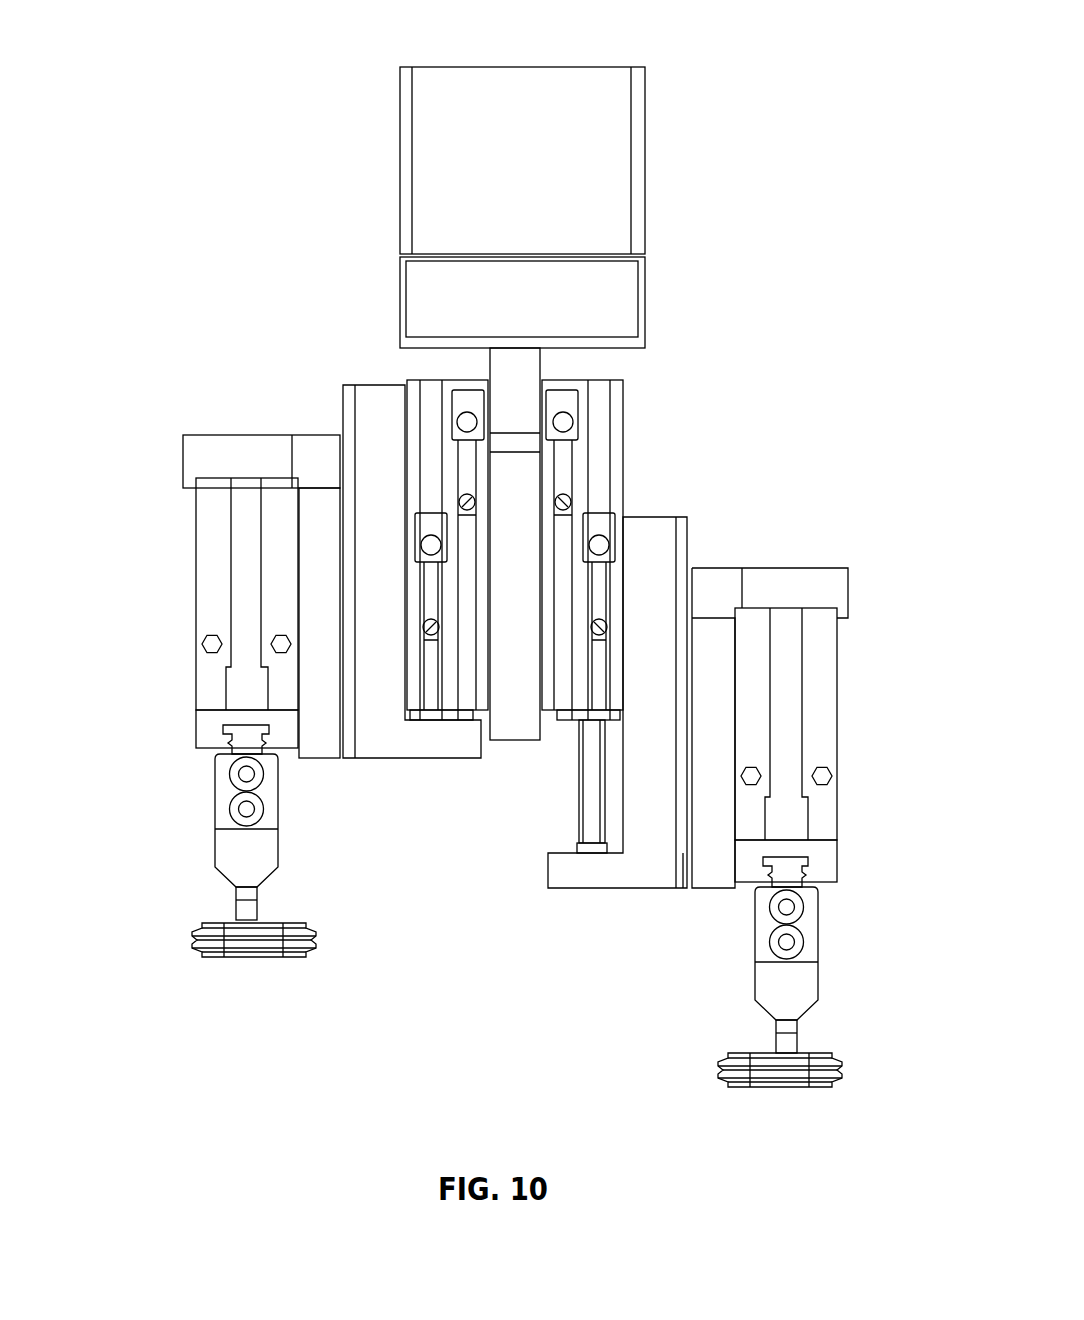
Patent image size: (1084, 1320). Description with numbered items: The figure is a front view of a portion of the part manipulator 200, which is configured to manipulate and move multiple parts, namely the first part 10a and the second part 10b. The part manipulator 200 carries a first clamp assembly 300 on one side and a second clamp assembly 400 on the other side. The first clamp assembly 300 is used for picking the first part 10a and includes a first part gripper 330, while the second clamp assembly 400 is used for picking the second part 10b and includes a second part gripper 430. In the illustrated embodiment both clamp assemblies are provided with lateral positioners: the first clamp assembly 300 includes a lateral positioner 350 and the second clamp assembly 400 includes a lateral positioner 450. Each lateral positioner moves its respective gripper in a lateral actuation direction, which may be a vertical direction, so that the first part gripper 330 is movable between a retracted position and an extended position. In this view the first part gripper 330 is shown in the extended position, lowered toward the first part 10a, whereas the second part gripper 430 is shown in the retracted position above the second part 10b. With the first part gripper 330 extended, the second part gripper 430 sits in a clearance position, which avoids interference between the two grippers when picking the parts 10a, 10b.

The part manipulator 200 is at (777, 97).
The lateral positioner 350 is at (650, 432).
The lateral positioner 450 is at (330, 378).
The second clamp assembly 400 is at (115, 670).
The second part gripper 430 is at (178, 845).
The second part 10b is at (202, 955).
The first clamp assembly 300 is at (885, 638).
The first part gripper 330 is at (847, 950).
The first part 10a is at (833, 1088).